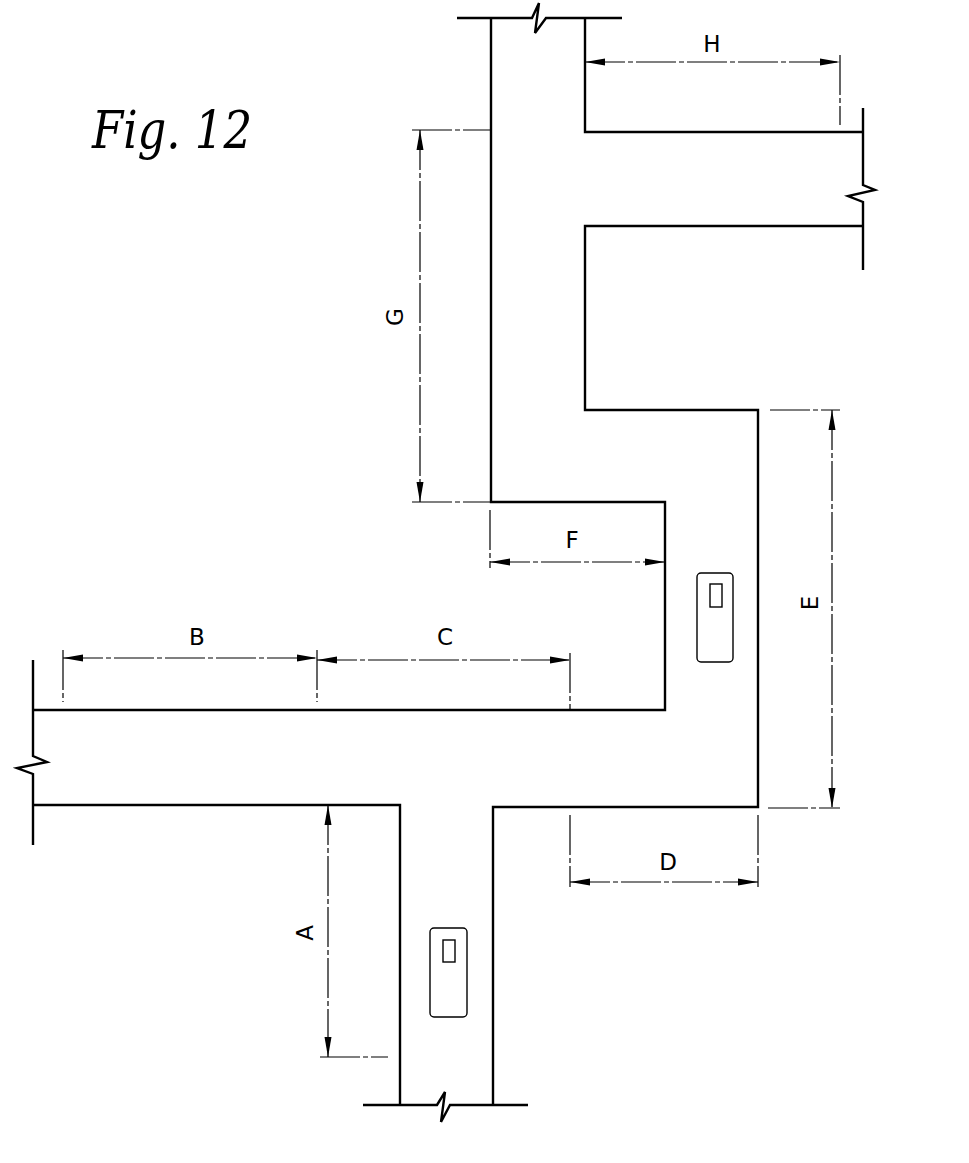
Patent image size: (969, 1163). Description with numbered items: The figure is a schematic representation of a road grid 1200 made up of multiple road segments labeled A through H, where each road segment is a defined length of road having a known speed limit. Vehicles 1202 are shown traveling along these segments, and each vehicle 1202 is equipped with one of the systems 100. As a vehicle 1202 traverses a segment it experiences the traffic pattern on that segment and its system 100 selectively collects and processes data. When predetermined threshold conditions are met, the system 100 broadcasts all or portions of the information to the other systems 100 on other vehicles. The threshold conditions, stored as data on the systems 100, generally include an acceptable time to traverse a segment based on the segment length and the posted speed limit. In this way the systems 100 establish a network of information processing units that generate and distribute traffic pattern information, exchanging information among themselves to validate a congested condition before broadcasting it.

The road grid 1200 is at (232, 272).
The system 100 is at (707, 593).
The vehicle 1202 is at (703, 628).